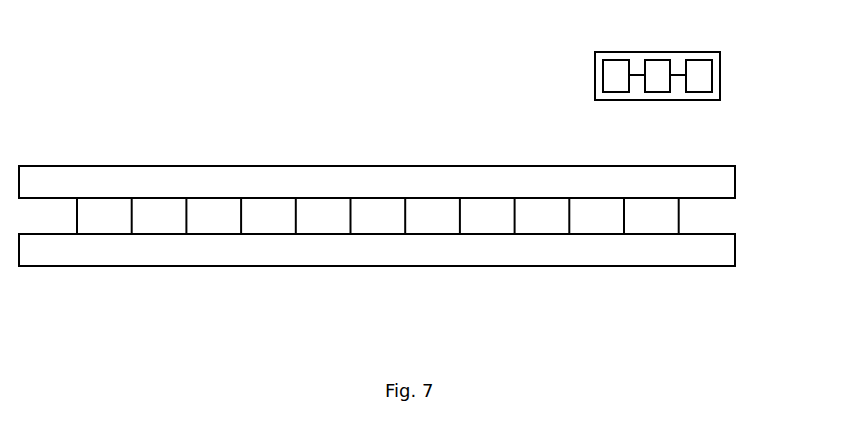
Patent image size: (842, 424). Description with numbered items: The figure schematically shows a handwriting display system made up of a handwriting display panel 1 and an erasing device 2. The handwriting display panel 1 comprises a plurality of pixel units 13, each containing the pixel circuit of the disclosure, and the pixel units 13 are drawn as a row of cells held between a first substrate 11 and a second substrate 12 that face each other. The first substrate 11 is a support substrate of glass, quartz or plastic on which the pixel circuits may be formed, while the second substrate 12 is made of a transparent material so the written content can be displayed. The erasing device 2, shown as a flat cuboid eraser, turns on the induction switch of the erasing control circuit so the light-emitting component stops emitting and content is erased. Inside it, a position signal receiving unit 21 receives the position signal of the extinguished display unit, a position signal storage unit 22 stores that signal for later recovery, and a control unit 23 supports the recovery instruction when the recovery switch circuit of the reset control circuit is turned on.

The handwriting display panel 1 is at (411, 226).
The first substrate 11 is at (722, 253).
The second substrate 12 is at (722, 184).
The pixel unit 13 is at (378, 215).
The erasing device 2 is at (674, 78).
The position signal receiving unit 21 is at (615, 70).
The position signal storage unit 22 is at (660, 70).
The control unit 23 is at (702, 70).